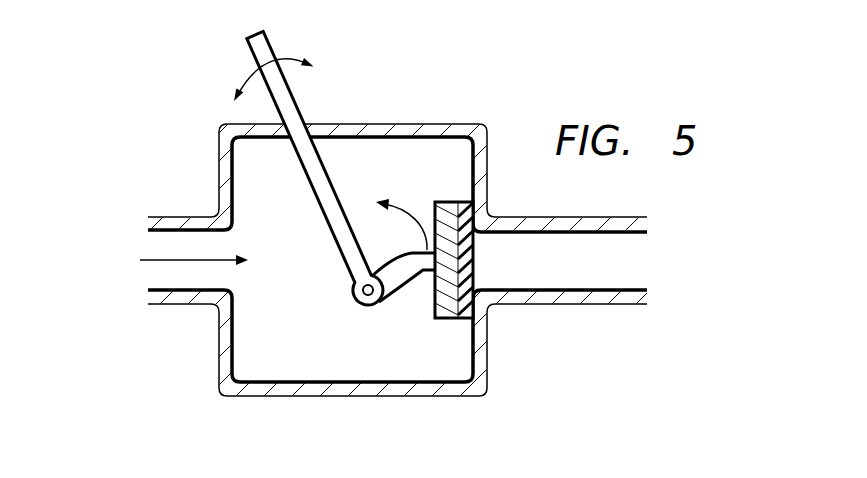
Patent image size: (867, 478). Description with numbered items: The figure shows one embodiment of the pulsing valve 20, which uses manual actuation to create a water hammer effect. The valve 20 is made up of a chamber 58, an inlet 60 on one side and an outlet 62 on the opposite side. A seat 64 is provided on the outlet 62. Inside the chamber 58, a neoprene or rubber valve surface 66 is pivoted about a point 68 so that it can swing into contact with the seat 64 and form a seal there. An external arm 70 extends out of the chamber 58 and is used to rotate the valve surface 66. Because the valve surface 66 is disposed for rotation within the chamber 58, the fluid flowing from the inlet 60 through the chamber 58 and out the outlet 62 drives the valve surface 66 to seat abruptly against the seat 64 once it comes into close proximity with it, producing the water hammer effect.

The pulsing valve 20 is at (433, 219).
The chamber 58 is at (467, 152).
The inlet 60 is at (172, 240).
The outlet 62 is at (593, 232).
The seat 64 is at (478, 302).
The valve surface 66 is at (468, 218).
The pivot point 68 is at (358, 298).
The external arm 70 is at (269, 47).